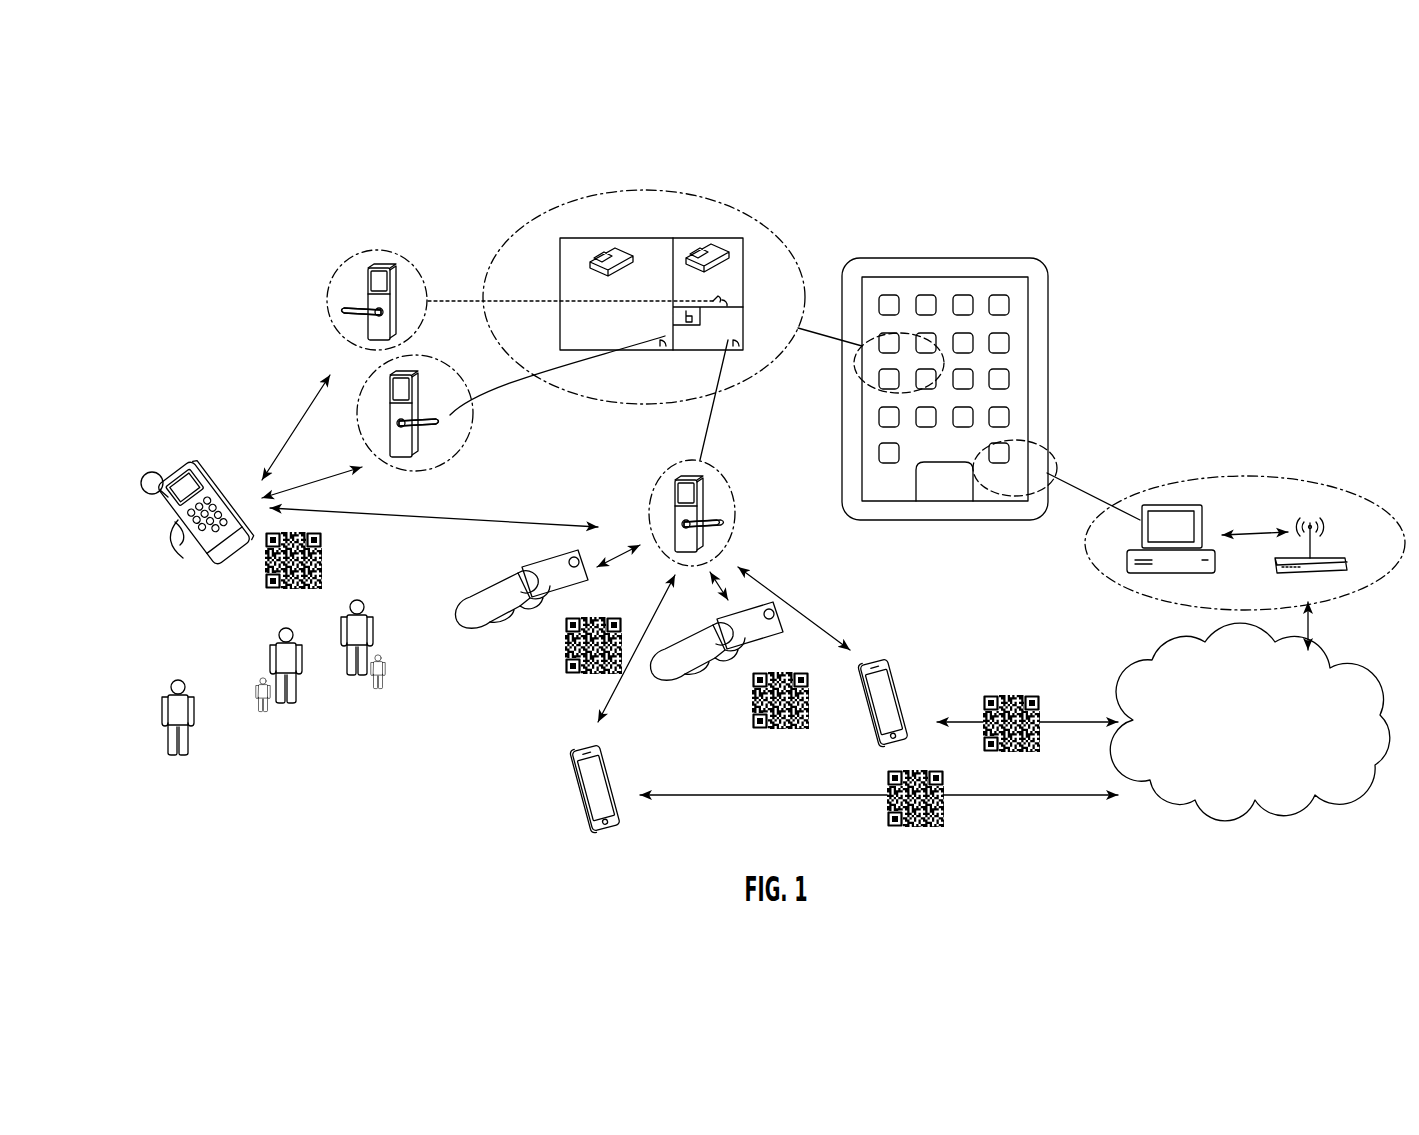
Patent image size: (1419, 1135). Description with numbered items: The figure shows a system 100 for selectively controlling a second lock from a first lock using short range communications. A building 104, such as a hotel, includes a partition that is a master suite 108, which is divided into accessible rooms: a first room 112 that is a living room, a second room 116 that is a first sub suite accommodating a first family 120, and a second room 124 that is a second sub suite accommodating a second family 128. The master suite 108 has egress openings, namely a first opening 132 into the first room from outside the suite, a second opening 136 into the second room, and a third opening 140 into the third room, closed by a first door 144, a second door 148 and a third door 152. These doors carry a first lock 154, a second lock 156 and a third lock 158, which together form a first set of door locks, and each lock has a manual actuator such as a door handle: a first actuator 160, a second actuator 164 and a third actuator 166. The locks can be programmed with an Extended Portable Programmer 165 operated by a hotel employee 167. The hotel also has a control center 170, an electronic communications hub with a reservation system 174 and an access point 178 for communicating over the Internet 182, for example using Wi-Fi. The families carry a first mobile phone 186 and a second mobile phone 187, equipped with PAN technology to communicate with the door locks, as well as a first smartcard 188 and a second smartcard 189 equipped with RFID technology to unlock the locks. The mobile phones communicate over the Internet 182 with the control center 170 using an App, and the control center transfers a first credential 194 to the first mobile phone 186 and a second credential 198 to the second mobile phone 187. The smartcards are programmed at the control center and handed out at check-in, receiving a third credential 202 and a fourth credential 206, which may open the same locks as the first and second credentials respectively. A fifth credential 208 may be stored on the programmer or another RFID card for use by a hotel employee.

The system 100 is at (1243, 168).
The building 104 is at (1040, 372).
The master suite 108 is at (797, 263).
The first room 112 is at (738, 333).
The second room 116 is at (640, 250).
The first family 120 is at (357, 683).
The second room 124 is at (678, 250).
The second family 128 is at (288, 708).
The first opening 132 is at (735, 352).
The second opening 136 is at (660, 340).
The third opening 140 is at (727, 303).
The first door 144 is at (747, 370).
The second door 148 is at (662, 335).
The third door 152 is at (718, 297).
The first lock 154 is at (705, 537).
The second lock 156 is at (420, 460).
The third lock 158 is at (365, 326).
The first actuator 160 is at (719, 522).
The second actuator 164 is at (438, 423).
The Extended Portable Programmer 165 is at (195, 560).
The third actuator 166 is at (345, 311).
The hotel employee 167 is at (192, 733).
The control center 170 is at (1245, 476).
The reservation system 174 is at (1163, 505).
The access point 178 is at (1316, 498).
The Internet 182 is at (1117, 670).
The first mobile phone 186 is at (898, 688).
The second mobile phone 187 is at (575, 780).
The first smartcard 188 is at (742, 672).
The second smartcard 189 is at (522, 566).
The first credential 194 is at (1010, 695).
The second credential 198 is at (887, 782).
The third credential 202 is at (752, 722).
The fourth credential 206 is at (565, 650).
The fifth credential 208 is at (293, 590).